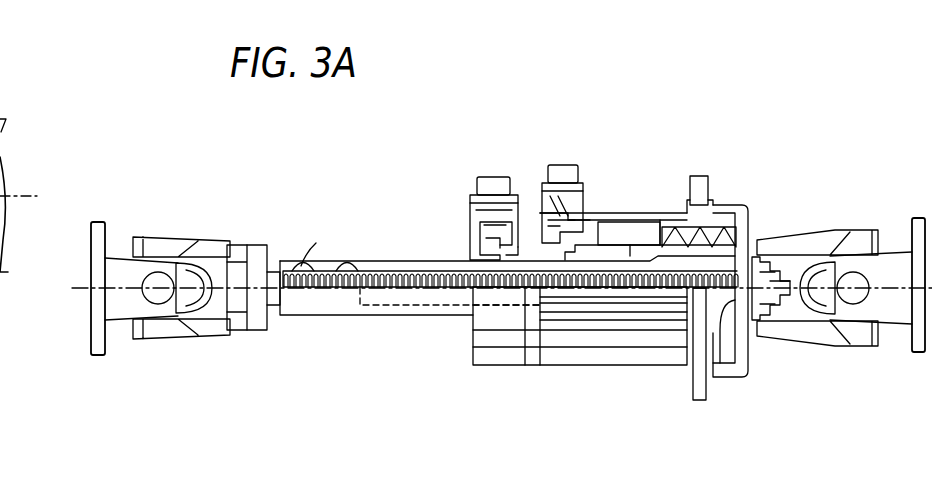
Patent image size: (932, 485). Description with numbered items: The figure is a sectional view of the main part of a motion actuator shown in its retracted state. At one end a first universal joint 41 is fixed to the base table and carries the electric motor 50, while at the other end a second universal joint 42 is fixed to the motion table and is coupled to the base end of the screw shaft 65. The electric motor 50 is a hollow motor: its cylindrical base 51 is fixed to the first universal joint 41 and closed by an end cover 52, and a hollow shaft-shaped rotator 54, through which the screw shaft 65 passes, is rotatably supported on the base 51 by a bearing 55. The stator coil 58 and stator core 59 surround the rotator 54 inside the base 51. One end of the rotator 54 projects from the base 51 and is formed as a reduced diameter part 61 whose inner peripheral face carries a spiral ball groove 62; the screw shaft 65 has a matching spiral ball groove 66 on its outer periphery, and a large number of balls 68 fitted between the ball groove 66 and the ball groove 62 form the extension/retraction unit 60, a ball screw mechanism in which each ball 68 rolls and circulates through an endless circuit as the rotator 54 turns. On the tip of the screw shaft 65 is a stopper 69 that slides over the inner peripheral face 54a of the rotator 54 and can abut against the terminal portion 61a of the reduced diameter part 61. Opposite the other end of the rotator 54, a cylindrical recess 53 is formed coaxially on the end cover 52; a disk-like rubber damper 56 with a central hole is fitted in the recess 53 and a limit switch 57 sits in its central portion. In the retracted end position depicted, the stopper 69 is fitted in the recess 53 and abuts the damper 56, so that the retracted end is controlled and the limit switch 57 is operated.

The first universal joint 41 is at (915, 240).
The second universal joint 42 is at (180, 236).
The electric motor 50 is at (603, 372).
The cylindrical base 51 is at (625, 222).
The end cover 52 is at (752, 214).
The cylindrical recess 53 is at (775, 312).
The rotator 54 is at (632, 254).
The inner peripheral face 54a is at (420, 261).
The bearing 55 is at (522, 215).
The damper 56 is at (762, 333).
The limit switch 57 is at (795, 262).
The stator coil 58 is at (560, 186).
The stator core 59 is at (606, 215).
The extension/retraction unit 60 is at (501, 289).
The reduced diameter part 61 is at (501, 245).
The terminal portion 61a is at (345, 271).
The spiral ball groove 62 is at (350, 269).
The screw shaft 65 is at (418, 292).
The spiral ball groove 66 is at (395, 291).
The ball 68 is at (308, 266).
The stopper 69 is at (716, 376).